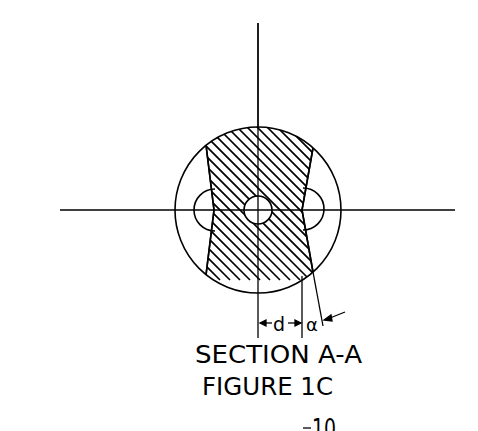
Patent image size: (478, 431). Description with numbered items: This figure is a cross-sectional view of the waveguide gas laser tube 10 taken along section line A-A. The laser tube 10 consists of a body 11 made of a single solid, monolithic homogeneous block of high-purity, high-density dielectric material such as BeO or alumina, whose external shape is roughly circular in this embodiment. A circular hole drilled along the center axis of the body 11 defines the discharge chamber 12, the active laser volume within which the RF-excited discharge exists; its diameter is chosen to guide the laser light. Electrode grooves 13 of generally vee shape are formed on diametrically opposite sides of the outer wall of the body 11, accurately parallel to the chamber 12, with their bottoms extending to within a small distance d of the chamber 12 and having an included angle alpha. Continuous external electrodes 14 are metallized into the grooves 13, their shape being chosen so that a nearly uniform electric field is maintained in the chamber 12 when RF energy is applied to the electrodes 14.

The laser tube 10 is at (291, 75).
The body 11 is at (261, 192).
The discharge chamber 12 is at (235, 201).
The electrode grooves 13 is at (207, 172).
The external electrodes 14 is at (256, 206).